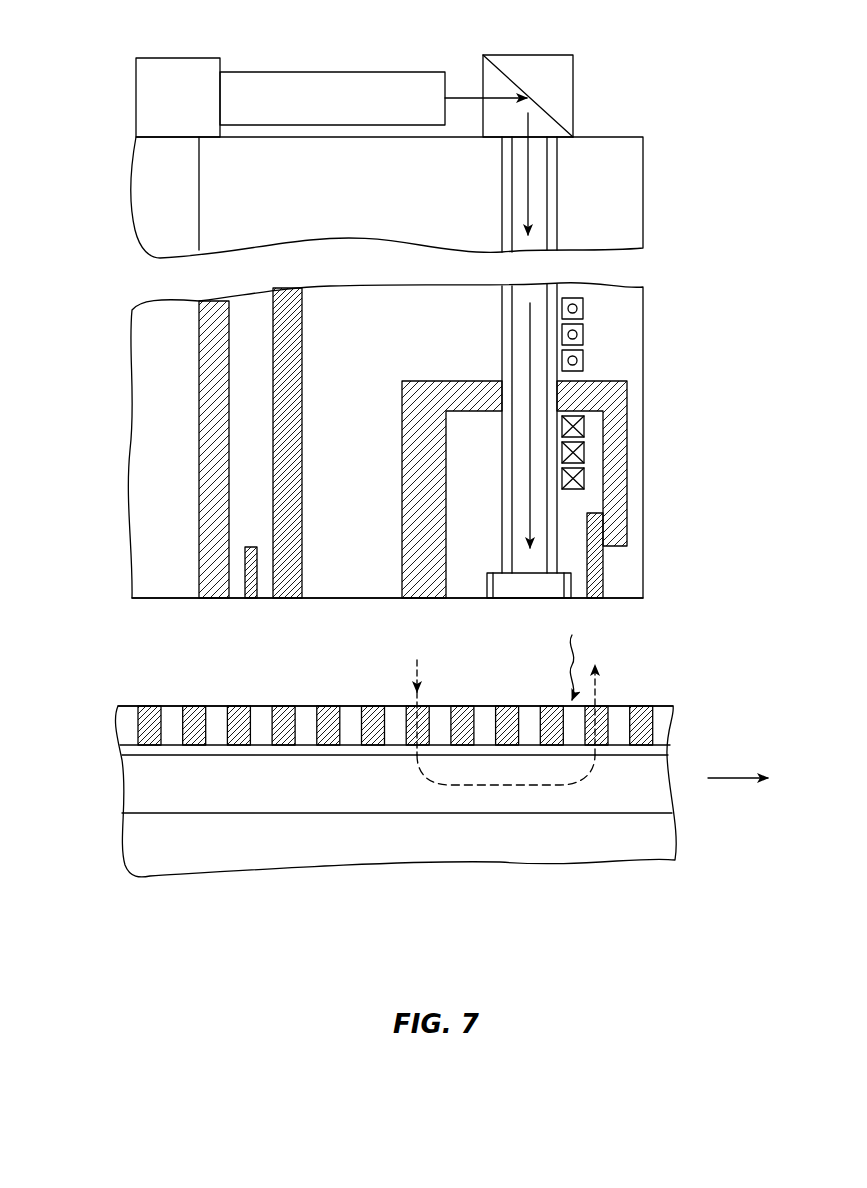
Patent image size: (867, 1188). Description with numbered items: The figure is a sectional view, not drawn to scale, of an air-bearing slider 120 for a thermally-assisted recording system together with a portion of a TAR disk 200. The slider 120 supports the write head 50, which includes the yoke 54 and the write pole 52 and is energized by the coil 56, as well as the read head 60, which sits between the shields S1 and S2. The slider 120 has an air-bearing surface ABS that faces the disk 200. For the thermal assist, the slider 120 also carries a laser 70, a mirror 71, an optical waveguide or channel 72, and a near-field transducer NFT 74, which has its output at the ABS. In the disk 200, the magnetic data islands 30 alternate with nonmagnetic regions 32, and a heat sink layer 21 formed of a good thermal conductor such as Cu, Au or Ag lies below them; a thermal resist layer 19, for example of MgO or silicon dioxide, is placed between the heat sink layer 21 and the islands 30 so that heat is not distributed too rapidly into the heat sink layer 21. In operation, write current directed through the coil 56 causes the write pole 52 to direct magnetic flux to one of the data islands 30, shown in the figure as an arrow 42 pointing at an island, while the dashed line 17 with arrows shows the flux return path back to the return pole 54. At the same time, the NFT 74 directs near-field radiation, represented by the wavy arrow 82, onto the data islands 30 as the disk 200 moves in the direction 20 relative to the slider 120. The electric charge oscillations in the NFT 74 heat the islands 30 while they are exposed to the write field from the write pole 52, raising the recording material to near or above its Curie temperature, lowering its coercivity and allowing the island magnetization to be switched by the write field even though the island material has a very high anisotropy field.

The laser 70 is at (153, 58).
The mirror 71 is at (575, 97).
The optical waveguide or channel 72 is at (517, 207).
The air-bearing slider 120 is at (678, 145).
The write head 50 is at (726, 286).
The shield S1 is at (198, 350).
The shield S2 is at (303, 348).
The read head 60 is at (247, 553).
The yoke 54 is at (408, 422).
The coil 56 is at (590, 489).
The write pole 52 is at (603, 560).
The NFT 74 is at (518, 592).
The air-bearing surface ABS is at (153, 600).
The TAR disk 200 is at (134, 889).
The nonmagnetic regions 32 is at (173, 712).
The islands 30 is at (140, 718).
The thermal resist layer 19 is at (670, 750).
The heat sink layer 21 is at (655, 783).
The flux return path 17 is at (498, 787).
The magnetic field 42 is at (598, 668).
The wavy arrow 82 is at (565, 660).
The medium motion direction 20 is at (742, 778).